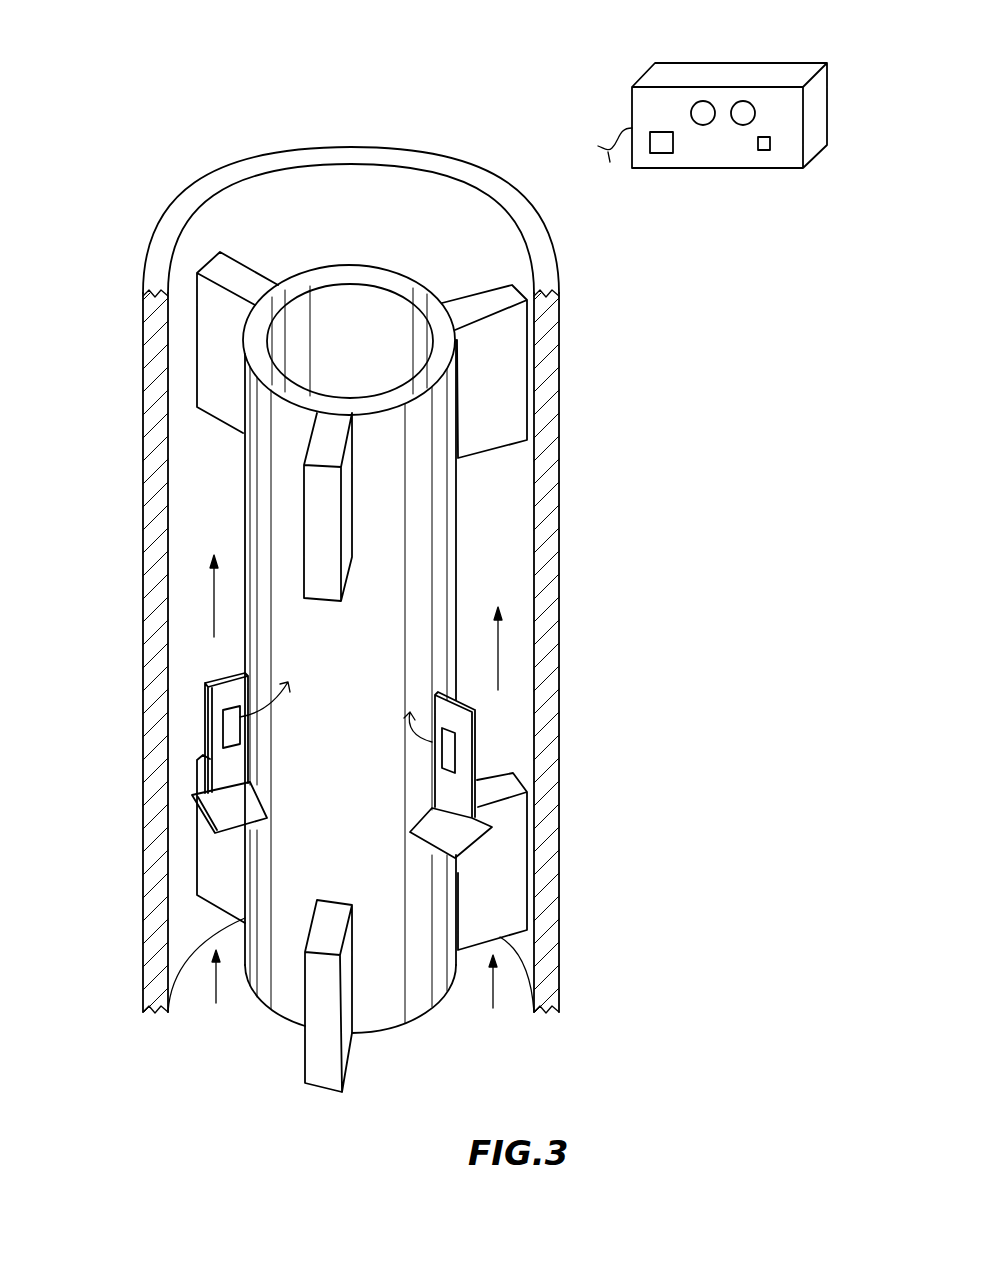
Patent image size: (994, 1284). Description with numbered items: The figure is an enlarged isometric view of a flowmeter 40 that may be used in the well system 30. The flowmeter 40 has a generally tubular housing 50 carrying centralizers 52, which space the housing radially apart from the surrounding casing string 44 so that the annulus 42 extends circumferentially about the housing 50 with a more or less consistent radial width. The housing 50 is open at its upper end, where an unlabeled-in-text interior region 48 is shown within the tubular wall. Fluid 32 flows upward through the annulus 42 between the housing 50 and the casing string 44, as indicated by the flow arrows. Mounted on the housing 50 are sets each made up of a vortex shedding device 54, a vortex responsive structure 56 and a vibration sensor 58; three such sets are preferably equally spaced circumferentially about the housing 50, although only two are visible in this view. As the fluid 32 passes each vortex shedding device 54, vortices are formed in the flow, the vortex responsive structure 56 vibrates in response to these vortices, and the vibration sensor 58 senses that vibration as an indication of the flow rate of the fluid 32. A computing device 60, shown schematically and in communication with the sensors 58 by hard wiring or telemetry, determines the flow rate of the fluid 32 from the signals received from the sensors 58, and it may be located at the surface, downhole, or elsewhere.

The system 30 is at (146, 124).
The fluid 32 is at (213, 598).
The flowmeter 40 is at (465, 572).
The annulus 42 is at (212, 523).
The casing string 44 is at (560, 507).
The central passage 48 is at (385, 322).
The tubular housing 50 is at (382, 268).
The centralizers 52 is at (210, 310).
The vortex shedding device 54 is at (193, 816).
The vortex responsive structure 56 is at (205, 718).
The vibration sensor 58 is at (223, 737).
The computing device 60 is at (728, 83).